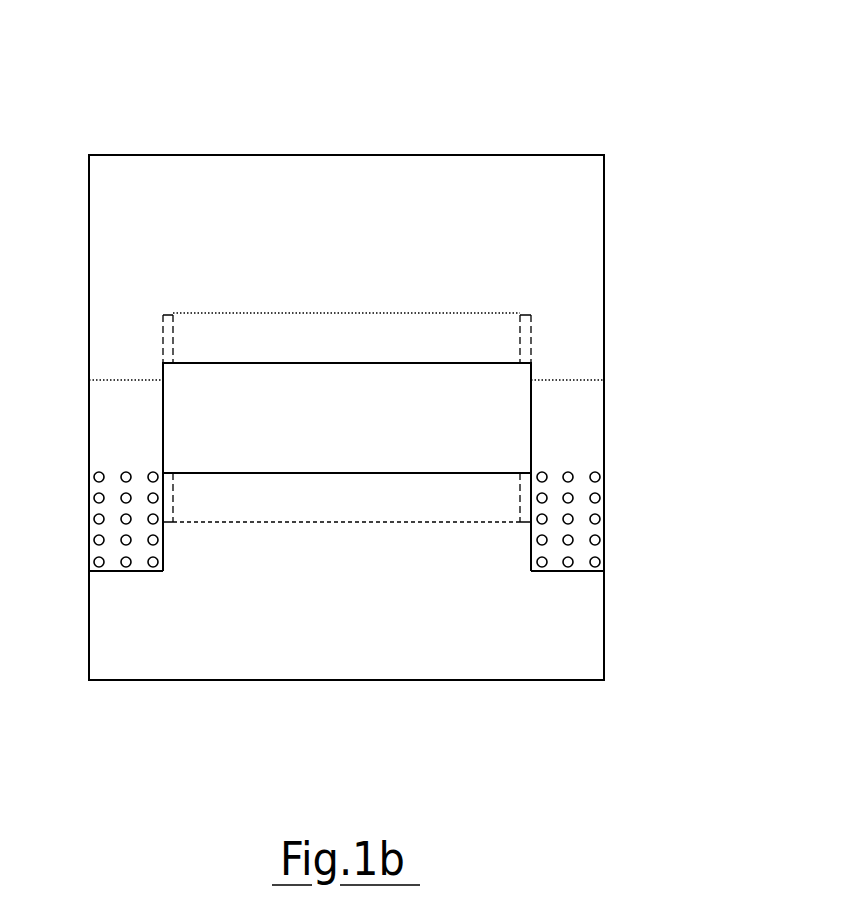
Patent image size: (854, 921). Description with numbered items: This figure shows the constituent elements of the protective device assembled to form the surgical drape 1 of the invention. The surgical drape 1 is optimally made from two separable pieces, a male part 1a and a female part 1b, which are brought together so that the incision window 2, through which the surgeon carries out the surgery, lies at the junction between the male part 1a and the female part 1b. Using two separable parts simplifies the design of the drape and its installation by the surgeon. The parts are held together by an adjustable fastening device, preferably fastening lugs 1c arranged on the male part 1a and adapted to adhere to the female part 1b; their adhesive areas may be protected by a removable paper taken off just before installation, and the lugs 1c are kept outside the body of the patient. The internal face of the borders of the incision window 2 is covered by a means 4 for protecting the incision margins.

The surgical drape 1 is at (626, 102).
The male part 1a is at (337, 185).
The female part 1b is at (337, 655).
The fastening lugs 1c is at (120, 528).
The incision window 2 is at (490, 417).
The means for protecting the incision margins 4 is at (270, 348).